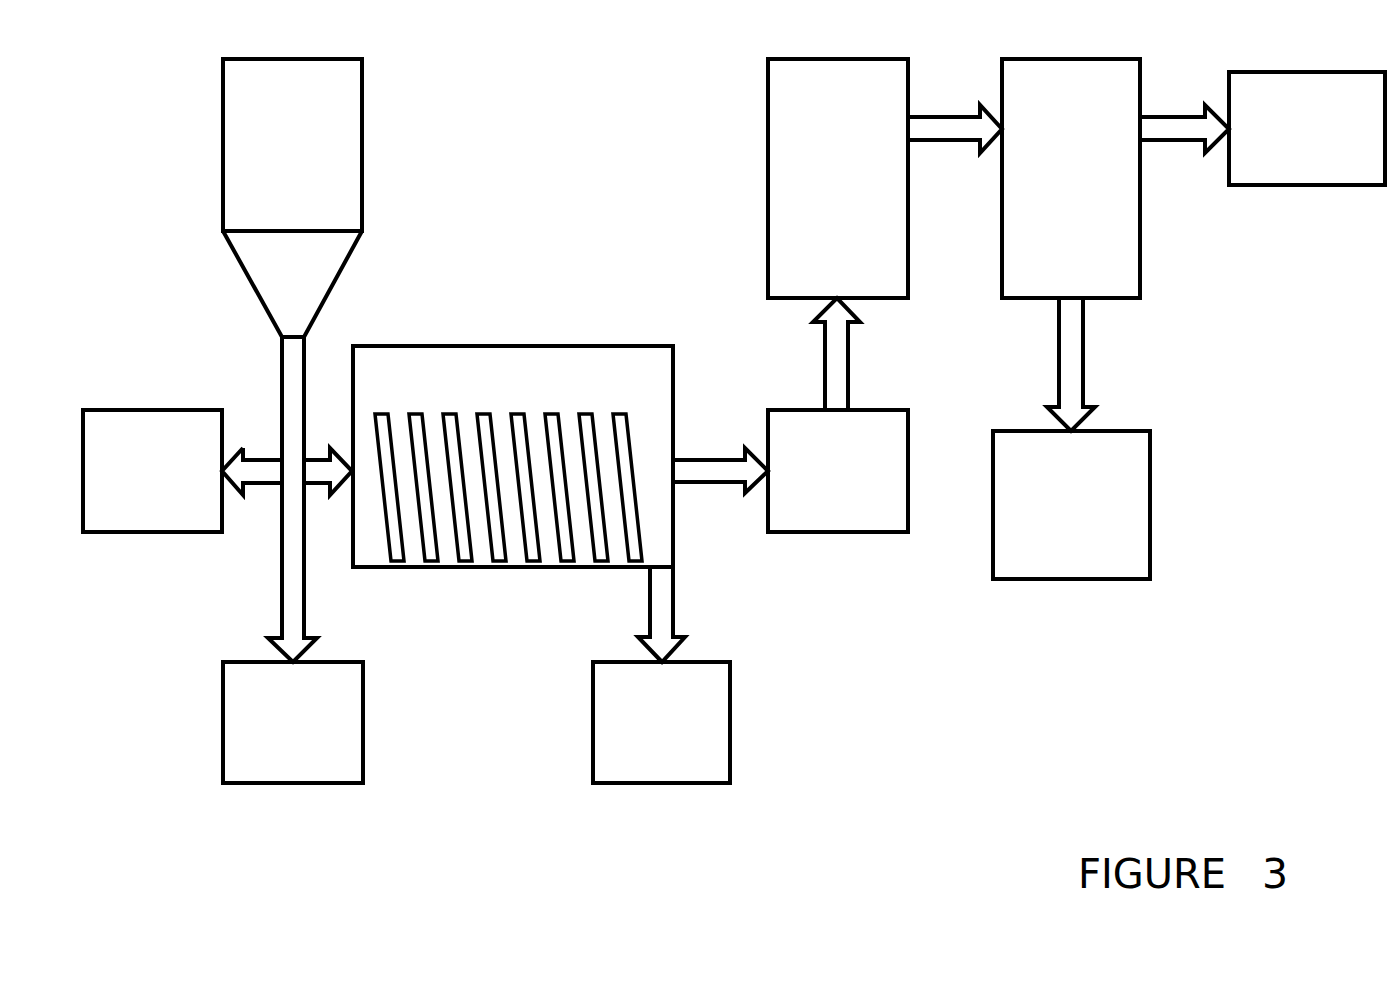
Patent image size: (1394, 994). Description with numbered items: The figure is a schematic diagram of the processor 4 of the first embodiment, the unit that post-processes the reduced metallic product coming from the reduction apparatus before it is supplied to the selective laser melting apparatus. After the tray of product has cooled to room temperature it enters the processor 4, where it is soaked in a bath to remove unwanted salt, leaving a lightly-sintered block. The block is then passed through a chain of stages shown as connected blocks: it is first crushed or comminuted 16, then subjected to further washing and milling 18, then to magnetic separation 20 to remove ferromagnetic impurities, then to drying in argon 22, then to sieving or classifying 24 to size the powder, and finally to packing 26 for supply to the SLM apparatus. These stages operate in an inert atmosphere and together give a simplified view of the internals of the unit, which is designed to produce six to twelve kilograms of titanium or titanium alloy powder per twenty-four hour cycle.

The processor 4 is at (809, 678).
The crushing or comminuting 16 is at (338, 130).
The further washing and milling 18 is at (535, 367).
The magnetic separation 20 is at (838, 508).
The drying in argon 22 is at (787, 180).
The sieving or classifying 24 is at (1118, 223).
The packing 26 is at (1329, 158).